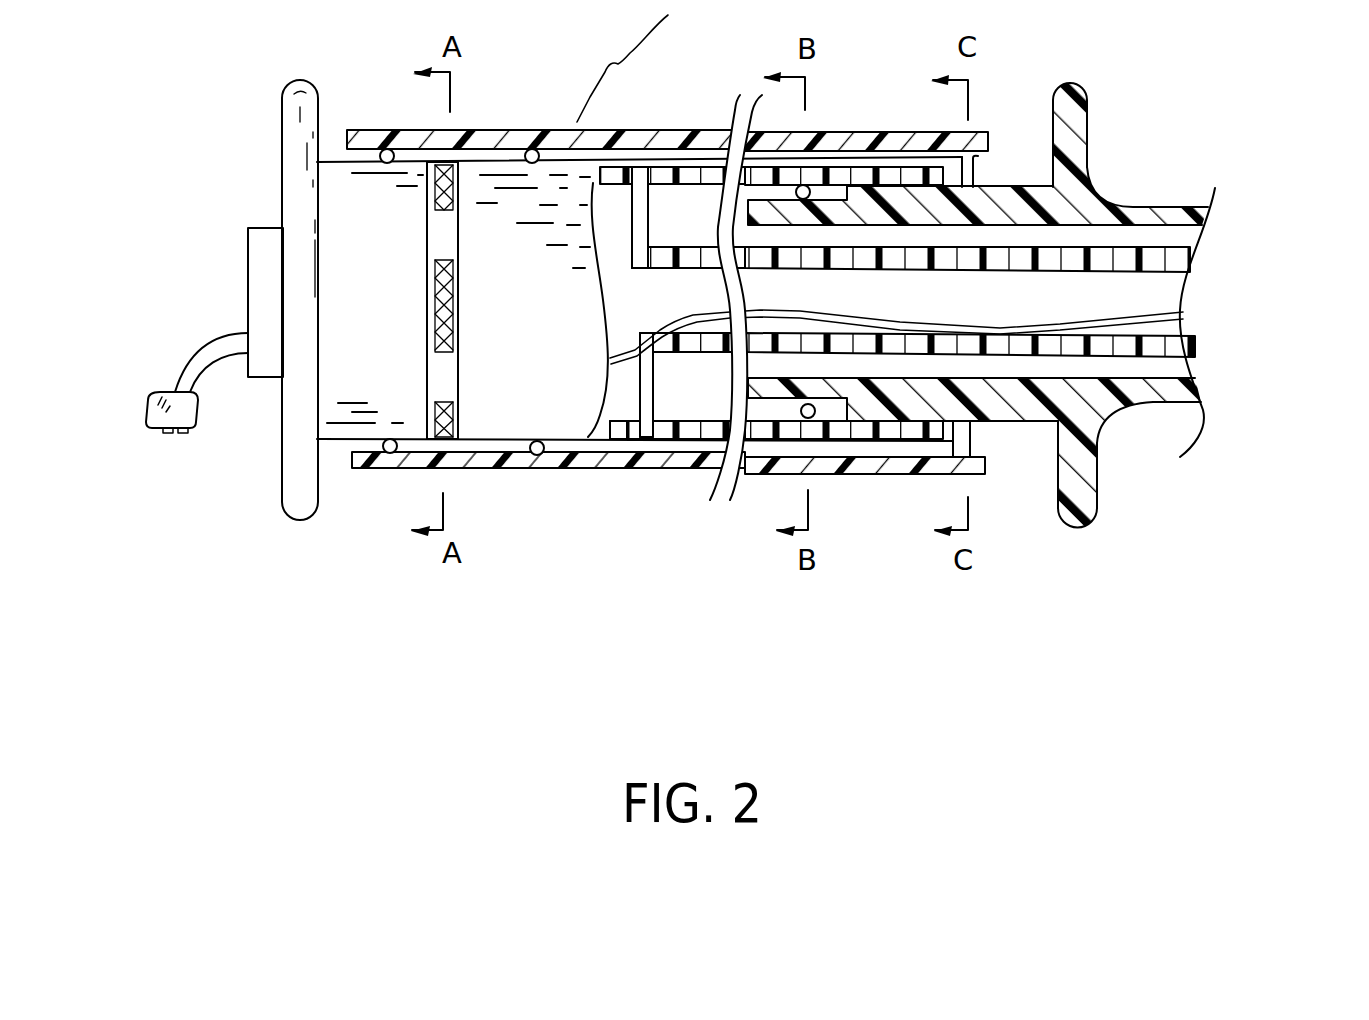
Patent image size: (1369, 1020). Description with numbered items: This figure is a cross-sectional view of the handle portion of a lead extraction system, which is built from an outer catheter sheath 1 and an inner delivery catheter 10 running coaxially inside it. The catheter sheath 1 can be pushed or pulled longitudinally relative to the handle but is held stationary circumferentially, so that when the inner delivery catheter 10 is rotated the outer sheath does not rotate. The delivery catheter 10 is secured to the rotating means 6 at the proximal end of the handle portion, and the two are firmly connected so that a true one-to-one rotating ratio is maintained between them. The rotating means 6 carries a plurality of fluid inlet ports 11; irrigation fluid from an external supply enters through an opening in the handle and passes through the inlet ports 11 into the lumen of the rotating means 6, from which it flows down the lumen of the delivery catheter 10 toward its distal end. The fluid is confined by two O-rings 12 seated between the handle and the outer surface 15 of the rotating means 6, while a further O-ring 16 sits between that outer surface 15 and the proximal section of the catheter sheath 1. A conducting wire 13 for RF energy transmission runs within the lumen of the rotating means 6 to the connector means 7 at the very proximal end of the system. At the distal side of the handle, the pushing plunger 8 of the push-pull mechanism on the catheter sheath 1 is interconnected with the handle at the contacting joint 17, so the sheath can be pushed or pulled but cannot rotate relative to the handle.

The catheter sheath 1 is at (1169, 195).
The rotating means 6 is at (322, 86).
The connector means 7 is at (152, 436).
The pushing plunger 8 is at (1090, 82).
The delivery catheter 10 is at (1167, 246).
The fluid inlet ports 11 is at (453, 160).
The O-rings 12 is at (388, 455).
The conducting wire 13 is at (1155, 308).
The outer surface of the rotating means 15 is at (627, 160).
The O-ring 16 is at (806, 186).
The contacting joint 17 is at (980, 163).